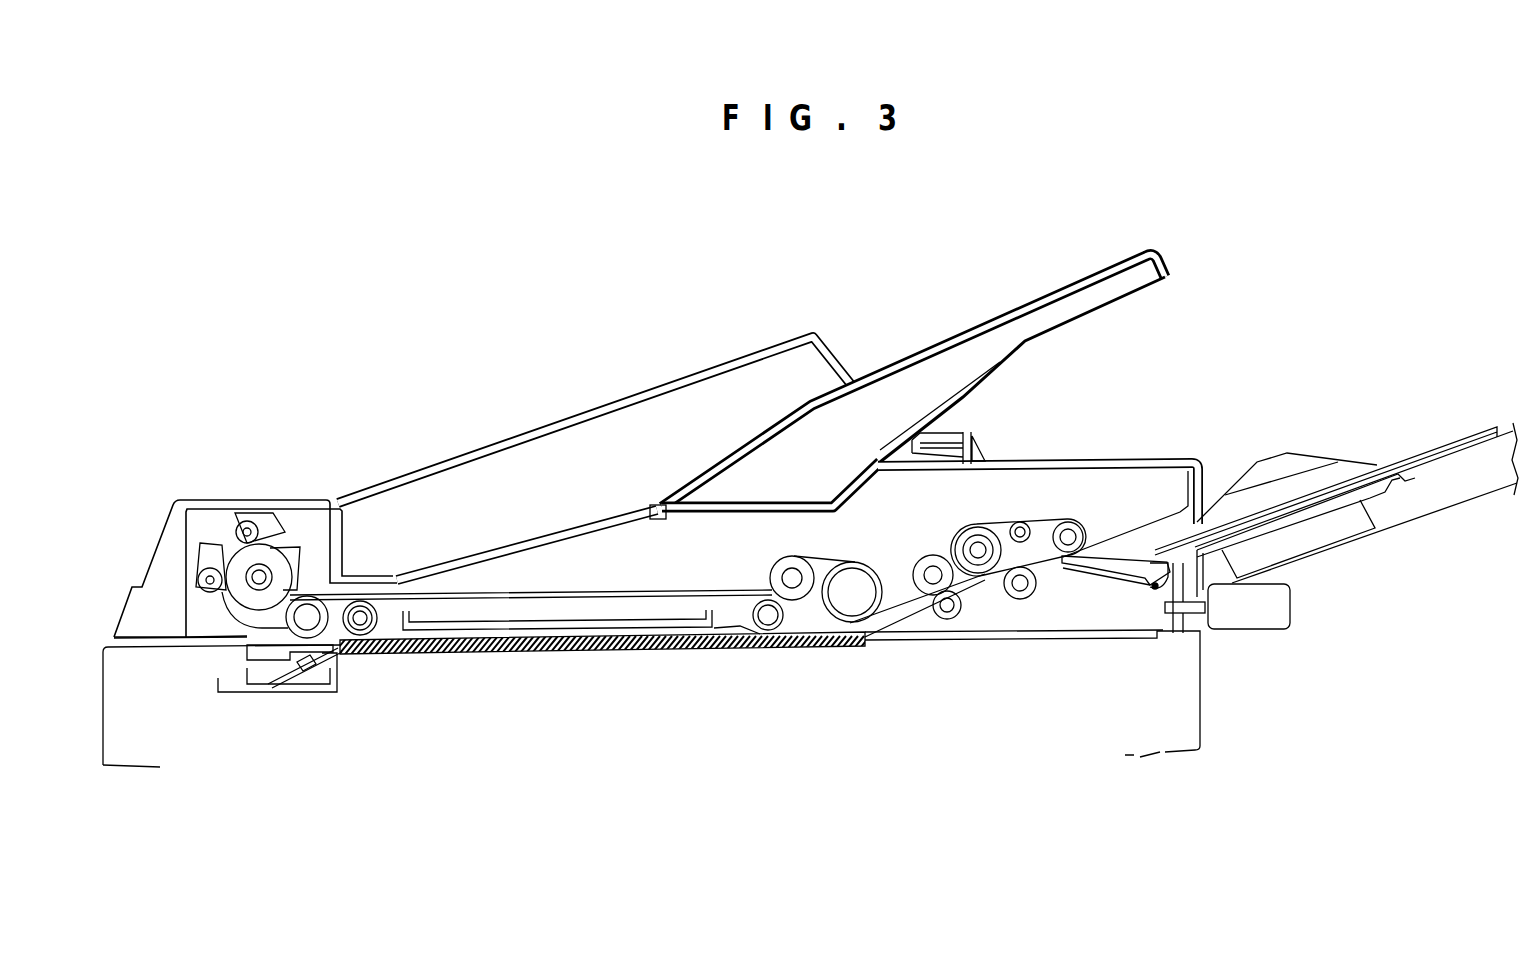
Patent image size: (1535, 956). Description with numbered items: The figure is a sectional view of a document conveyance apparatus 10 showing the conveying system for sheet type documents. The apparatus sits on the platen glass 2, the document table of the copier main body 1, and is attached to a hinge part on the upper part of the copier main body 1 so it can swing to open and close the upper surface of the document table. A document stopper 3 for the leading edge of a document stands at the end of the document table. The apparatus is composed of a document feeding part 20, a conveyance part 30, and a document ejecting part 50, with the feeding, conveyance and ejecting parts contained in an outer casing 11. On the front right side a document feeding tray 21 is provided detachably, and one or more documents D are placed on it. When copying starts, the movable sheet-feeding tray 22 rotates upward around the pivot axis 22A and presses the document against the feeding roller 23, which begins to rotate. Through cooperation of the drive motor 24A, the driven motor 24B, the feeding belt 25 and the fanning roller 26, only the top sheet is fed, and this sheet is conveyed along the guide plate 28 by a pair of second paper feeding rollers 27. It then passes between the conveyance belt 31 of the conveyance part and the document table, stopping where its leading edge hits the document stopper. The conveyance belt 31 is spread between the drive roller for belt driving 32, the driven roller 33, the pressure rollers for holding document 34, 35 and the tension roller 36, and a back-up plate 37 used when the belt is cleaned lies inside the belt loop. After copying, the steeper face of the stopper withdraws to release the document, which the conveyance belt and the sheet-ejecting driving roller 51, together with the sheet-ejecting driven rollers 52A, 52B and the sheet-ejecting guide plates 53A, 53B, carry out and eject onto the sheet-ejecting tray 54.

The copier main body 1 is at (1210, 698).
The platen glass 2 is at (601, 656).
The document stopper 3 is at (347, 668).
The document conveyance apparatus 10 is at (751, 375).
The outer casing 11 is at (1153, 460).
The document feeding part 20 is at (1210, 453).
The document feeding tray 21 is at (1415, 456).
The movable sheet-feeding tray 22 is at (1110, 590).
The pivot axis 22A is at (1150, 592).
The feeding roller 23 is at (1094, 528).
The drive motor 24A is at (978, 527).
The driven motor 24B is at (1078, 524).
The feeding belt 25 is at (1040, 526).
The fanning roller 26 is at (1015, 601).
The second paper feeding rollers 27 is at (947, 621).
The guide plate 28 is at (888, 641).
The conveyance part 30 is at (545, 614).
The conveyance belt 31 is at (724, 640).
The drive roller for belt driving 32 is at (840, 624).
The driven roller 33 is at (290, 634).
The pressure roller for holding document 34 is at (767, 632).
The pressure roller for holding document 35 is at (372, 637).
The tension roller 36 is at (796, 556).
The back-up plate 37 is at (634, 619).
The document ejecting part 50 is at (306, 472).
The sheet-ejecting driving roller 51 is at (272, 562).
The sheet-ejecting driven roller 52A is at (207, 567).
The sheet-ejecting driven roller 52B is at (246, 520).
The sheet-ejecting guide plate 53A is at (232, 512).
The sheet-ejecting guide plate 53B is at (294, 548).
The sheet-ejecting tray 54 is at (903, 356).
The document D is at (1457, 452).